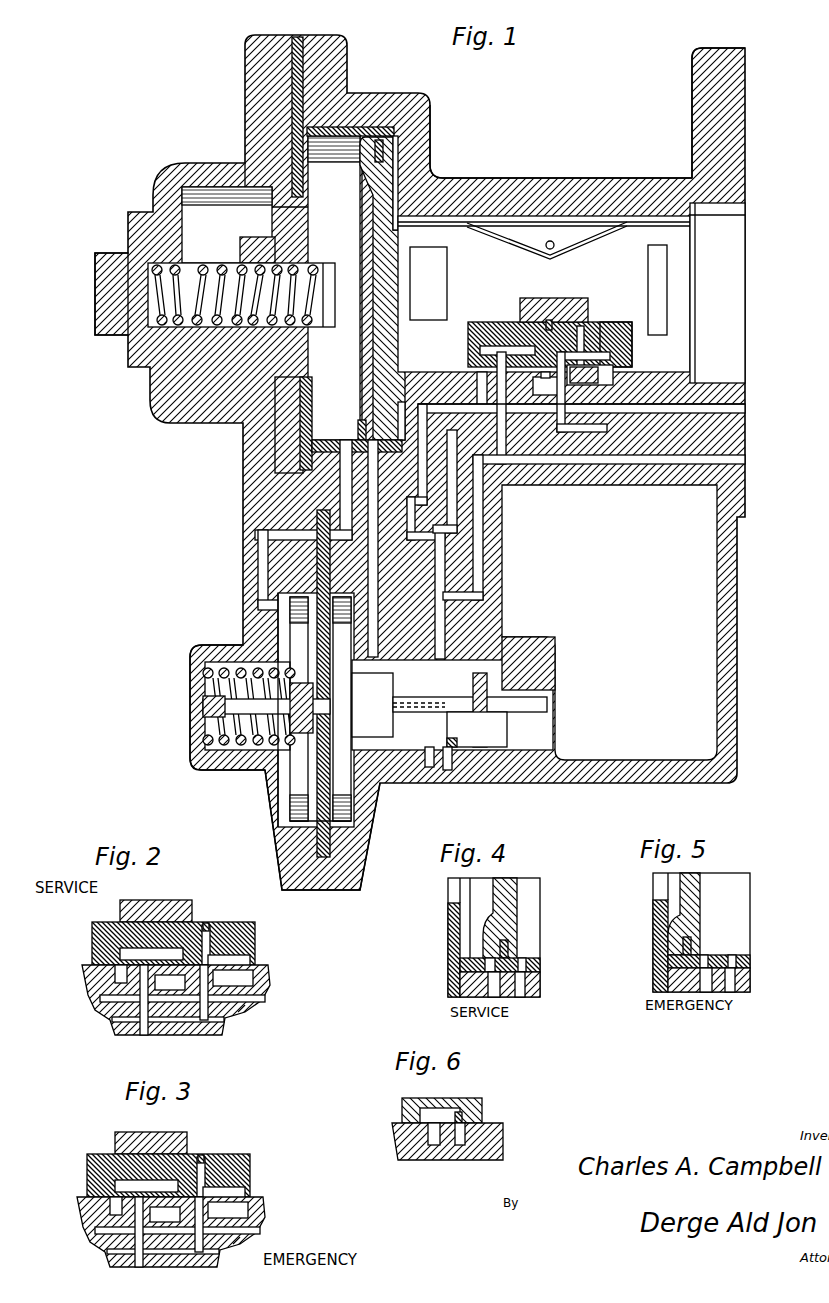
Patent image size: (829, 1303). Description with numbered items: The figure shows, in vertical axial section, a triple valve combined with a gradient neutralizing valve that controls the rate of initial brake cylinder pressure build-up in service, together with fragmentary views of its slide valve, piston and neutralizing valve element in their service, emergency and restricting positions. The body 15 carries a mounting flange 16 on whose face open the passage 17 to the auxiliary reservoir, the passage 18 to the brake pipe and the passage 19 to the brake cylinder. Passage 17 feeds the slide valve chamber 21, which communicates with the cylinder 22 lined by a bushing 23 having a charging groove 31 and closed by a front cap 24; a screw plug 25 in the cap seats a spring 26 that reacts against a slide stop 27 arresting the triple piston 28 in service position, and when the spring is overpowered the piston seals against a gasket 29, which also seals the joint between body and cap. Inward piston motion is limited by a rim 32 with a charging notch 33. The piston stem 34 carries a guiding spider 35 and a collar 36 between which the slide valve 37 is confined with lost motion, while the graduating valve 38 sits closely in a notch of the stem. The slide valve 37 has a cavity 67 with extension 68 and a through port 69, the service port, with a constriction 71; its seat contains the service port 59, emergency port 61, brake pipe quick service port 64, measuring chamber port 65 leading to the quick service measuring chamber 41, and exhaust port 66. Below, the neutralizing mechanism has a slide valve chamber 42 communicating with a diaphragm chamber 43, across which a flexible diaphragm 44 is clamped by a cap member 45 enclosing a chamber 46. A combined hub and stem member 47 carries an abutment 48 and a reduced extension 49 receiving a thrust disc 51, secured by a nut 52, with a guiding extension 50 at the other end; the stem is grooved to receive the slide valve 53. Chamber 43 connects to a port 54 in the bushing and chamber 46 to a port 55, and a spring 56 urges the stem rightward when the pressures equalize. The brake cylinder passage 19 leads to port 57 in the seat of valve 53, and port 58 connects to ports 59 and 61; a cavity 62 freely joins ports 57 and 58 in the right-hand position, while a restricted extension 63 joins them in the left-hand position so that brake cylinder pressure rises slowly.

In FIG. 1, the body 15 is at (540, 178).
In FIG. 1, the mounting flange 16 is at (692, 118).
In FIG. 1, the passage 17 is at (745, 240).
In FIG. 1, the passage 18 is at (745, 404).
In FIG. 2, the passage 18 is at (265, 1001).
In FIG. 3, the passage 18 is at (198, 1232).
In FIG. 1, the passage 19 is at (745, 460).
In FIG. 1, the slide valve chamber 21 is at (675, 247).
In FIG. 1, the cylinder 22 is at (335, 288).
In FIG. 1, the bushing 23 is at (350, 127).
In FIG. 4, the bushing 23 is at (540, 966).
In FIG. 5, the bushing 23 is at (750, 963).
In FIG. 1, the front cap 24 is at (207, 165).
In FIG. 1, the screw plug 25 is at (115, 340).
In FIG. 1, the spring 26 is at (207, 265).
In FIG. 1, the slide stop 27 is at (310, 407).
In FIG. 1, the triple piston 28 is at (368, 236).
In FIG. 4, the triple piston 28 is at (520, 921).
In FIG. 5, the triple piston 28 is at (700, 906).
In FIG. 1, the gasket 29 is at (268, 68).
In FIG. 4, the gasket 29 is at (448, 926).
In FIG. 5, the gasket 29 is at (653, 941).
In FIG. 1, the charging groove 31 is at (396, 136).
In FIG. 1, the rim 32 is at (405, 374).
In FIG. 1, the charging notch 33 is at (433, 176).
In FIG. 1, the piston stem 34 is at (428, 283).
In FIG. 1, the guiding spider 35 is at (668, 295).
In FIG. 1, the collar 36 is at (547, 240).
In FIG. 1, the slide valve 37 is at (632, 346).
In FIG. 2, the slide valve 37 is at (92, 931).
In FIG. 3, the slide valve 37 is at (149, 1175).
In FIG. 1, the graduating valve 38 is at (522, 304).
In FIG. 2, the graduating valve 38 is at (120, 911).
In FIG. 3, the graduating valve 38 is at (145, 1130).
In FIG. 1, the quick service measuring chamber 41 is at (609, 622).
In FIG. 1, the slide valve chamber 42 is at (505, 640).
In FIG. 1, the diaphragm chamber 43 is at (355, 857).
In FIG. 1, the flexible diaphragm 44 is at (320, 819).
In FIG. 1, the cap member 45 is at (190, 761).
In FIG. 1, the chamber 46 is at (288, 790).
In FIG. 1, the combined hub and stem member 47 is at (372, 705).
In FIG. 1, the abutment 48 is at (355, 800).
In FIG. 1, the reduced extension 49 is at (203, 707).
In FIG. 1, the extension 50 is at (550, 711).
In FIG. 1, the thrust disc 51 is at (300, 641).
In FIG. 1, the nut 52 is at (300, 733).
In FIG. 1, the slide valve 53 is at (508, 741).
In FIG. 6, the slide valve 53 is at (480, 1103).
In FIG. 1, the port 54 is at (360, 432).
In FIG. 4, the port 54 is at (525, 959).
In FIG. 5, the port 54 is at (735, 956).
In FIG. 1, the port 55 is at (345, 440).
In FIG. 4, the port 55 is at (482, 963).
In FIG. 5, the port 55 is at (700, 956).
In FIG. 1, the spring 56 is at (205, 669).
In FIG. 1, the port 57 is at (452, 771).
In FIG. 6, the port 57 is at (462, 1146).
In FIG. 1, the port 58 is at (430, 761).
In FIG. 6, the port 58 is at (432, 1146).
In FIG. 1, the service port 59 is at (596, 345).
In FIG. 2, the service port 59 is at (238, 1016).
In FIG. 3, the service port 59 is at (263, 1198).
In FIG. 1, the emergency port 61 is at (618, 378).
In FIG. 2, the emergency port 61 is at (255, 976).
In FIG. 3, the emergency port 61 is at (262, 1194).
In FIG. 1, the cavity 62 is at (475, 721).
In FIG. 6, the cavity 62 is at (402, 1119).
In FIG. 1, the restricted extension 63 is at (457, 748).
In FIG. 6, the restricted extension 63 is at (470, 1116).
In FIG. 1, the brake pipe quick service port 64 is at (478, 385).
In FIG. 2, the brake pipe quick service port 64 is at (115, 981).
In FIG. 3, the brake pipe quick service port 64 is at (87, 1204).
In FIG. 1, the measuring chamber port 65 is at (503, 440).
In FIG. 2, the measuring chamber port 65 is at (144, 1035).
In FIG. 3, the measuring chamber port 65 is at (156, 1241).
In FIG. 1, the exhaust port 66 is at (562, 432).
In FIG. 2, the exhaust port 66 is at (198, 1020).
In FIG. 3, the exhaust port 66 is at (207, 1240).
In FIG. 1, the cavity 67 is at (500, 345).
In FIG. 2, the cavity 67 is at (115, 953).
In FIG. 3, the cavity 67 is at (127, 1155).
In FIG. 1, the extension 68 is at (548, 322).
In FIG. 2, the extension 68 is at (207, 925).
In FIG. 3, the extension 68 is at (215, 1135).
In FIG. 1, the through port 69 is at (626, 330).
In FIG. 2, the through port 69 is at (250, 959).
In FIG. 3, the through port 69 is at (258, 1165).
In FIG. 1, the constriction 71 is at (581, 326).
In FIG. 2, the constriction 71 is at (212, 931).
In FIG. 3, the constriction 71 is at (237, 1158).